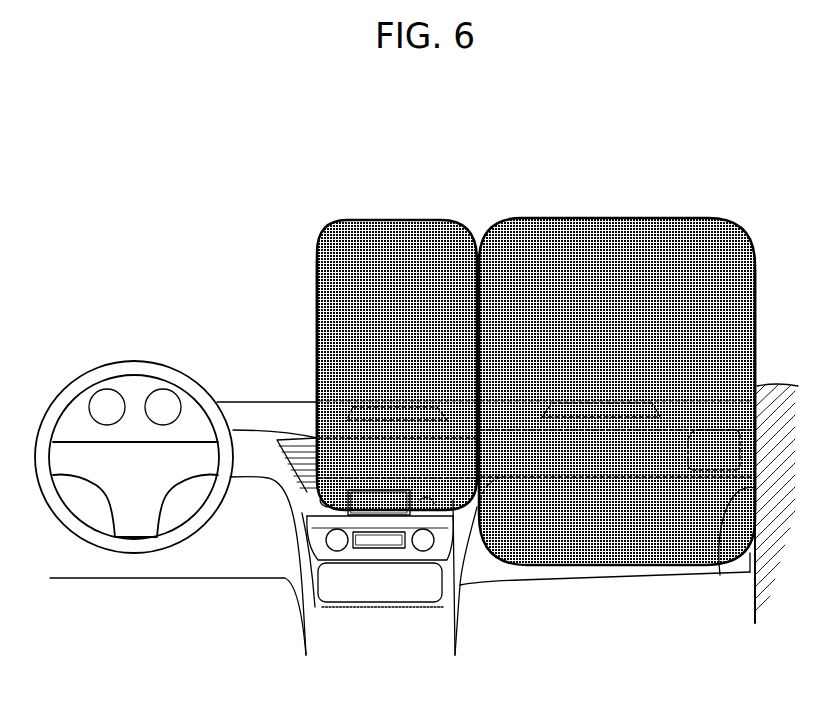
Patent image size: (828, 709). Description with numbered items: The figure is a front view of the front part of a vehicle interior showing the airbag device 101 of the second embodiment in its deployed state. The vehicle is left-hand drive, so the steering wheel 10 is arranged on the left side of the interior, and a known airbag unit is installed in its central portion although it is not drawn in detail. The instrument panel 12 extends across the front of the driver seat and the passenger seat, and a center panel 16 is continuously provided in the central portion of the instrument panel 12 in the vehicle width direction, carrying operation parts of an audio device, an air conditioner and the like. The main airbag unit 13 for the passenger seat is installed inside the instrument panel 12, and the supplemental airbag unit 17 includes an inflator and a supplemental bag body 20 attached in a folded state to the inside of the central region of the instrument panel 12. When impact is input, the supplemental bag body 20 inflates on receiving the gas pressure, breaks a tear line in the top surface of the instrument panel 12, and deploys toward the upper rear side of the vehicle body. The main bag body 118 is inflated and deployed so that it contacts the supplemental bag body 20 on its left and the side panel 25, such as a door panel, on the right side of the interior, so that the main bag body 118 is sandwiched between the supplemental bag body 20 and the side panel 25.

The steering wheel 10 is at (145, 367).
The instrument panel 12 is at (258, 402).
The main airbag unit 13 is at (687, 213).
The center panel 16 is at (303, 520).
The supplemental airbag unit 17 is at (411, 216).
The supplemental bag body 20 is at (327, 285).
The side panel 25 is at (720, 575).
The airbag device 101 is at (567, 204).
The main bag body 118 is at (730, 290).